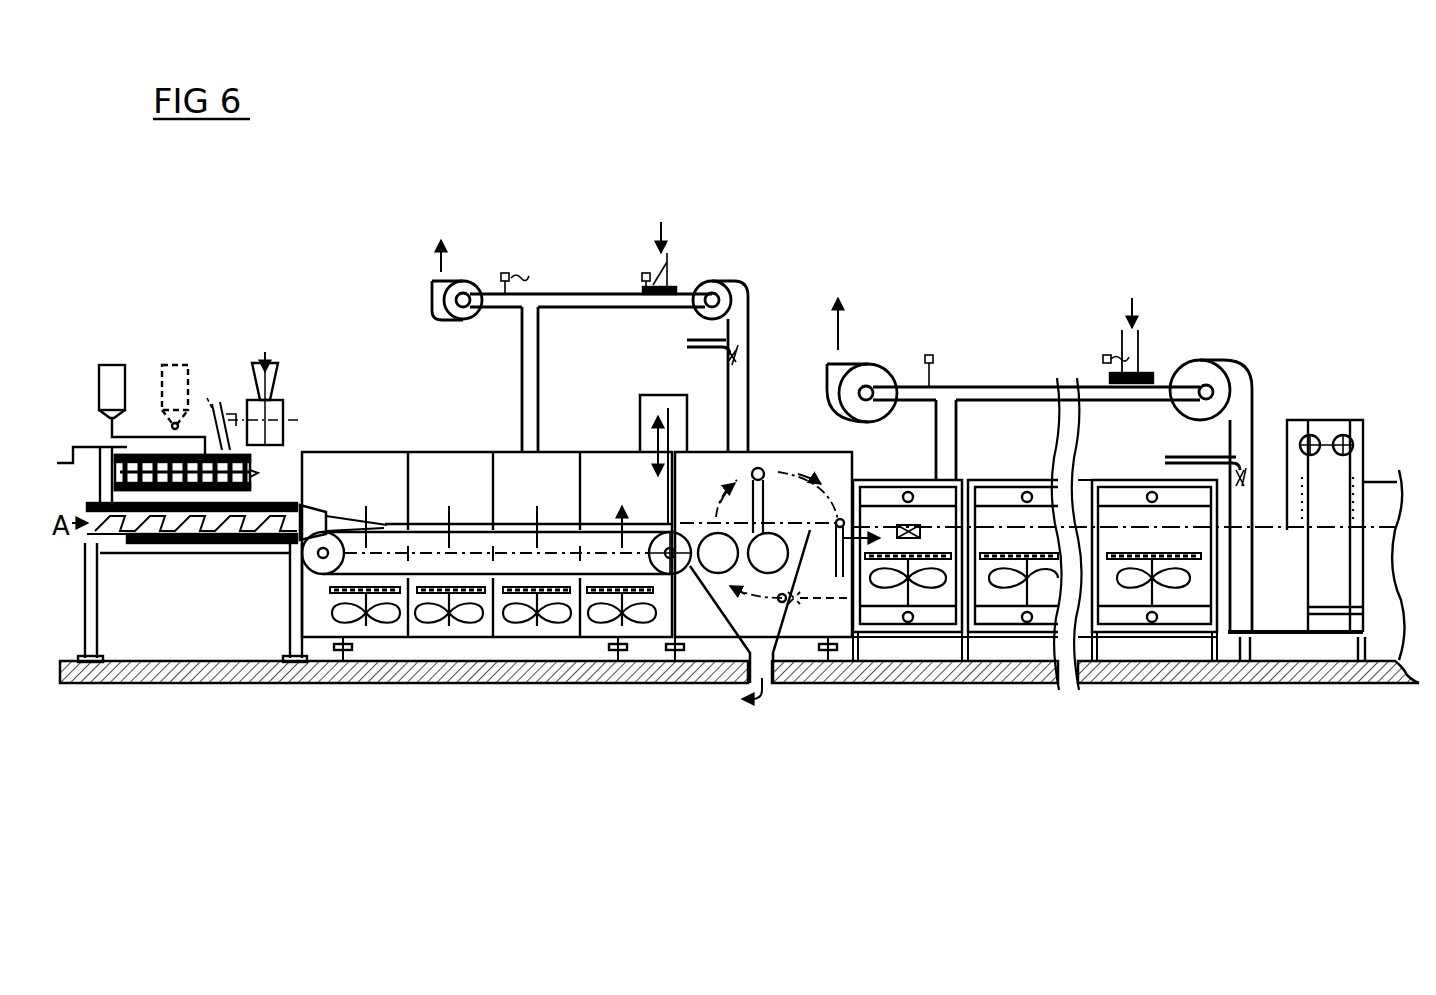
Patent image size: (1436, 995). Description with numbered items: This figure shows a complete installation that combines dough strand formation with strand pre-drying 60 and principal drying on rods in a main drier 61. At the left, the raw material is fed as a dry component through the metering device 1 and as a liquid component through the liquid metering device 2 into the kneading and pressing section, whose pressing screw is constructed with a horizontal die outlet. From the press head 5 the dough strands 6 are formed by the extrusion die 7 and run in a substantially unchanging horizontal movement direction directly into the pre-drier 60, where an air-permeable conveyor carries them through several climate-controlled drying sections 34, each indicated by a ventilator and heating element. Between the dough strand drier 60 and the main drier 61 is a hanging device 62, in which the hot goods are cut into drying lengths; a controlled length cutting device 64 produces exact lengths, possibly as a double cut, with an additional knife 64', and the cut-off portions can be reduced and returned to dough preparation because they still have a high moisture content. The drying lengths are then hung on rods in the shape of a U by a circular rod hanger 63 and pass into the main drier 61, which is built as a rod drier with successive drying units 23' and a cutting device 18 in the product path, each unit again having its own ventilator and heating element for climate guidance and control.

The metering device 1 is at (284, 402).
The liquid metering device 2 is at (110, 375).
The press head 5 is at (316, 512).
The dough strands 6 is at (340, 514).
The extrusion die 7 is at (324, 516).
The cutting device 18 is at (918, 525).
The drying unit 23' is at (1147, 543).
The drying tunnel 34 is at (492, 485).
The pre-drying (dough strand drier) 60 is at (499, 694).
The main drier 61 is at (1125, 692).
The hanging device 62 is at (810, 693).
The circular rod hanger 63 is at (802, 645).
The controlled length cutting device 64 is at (629, 459).
The additional knife 64' is at (786, 467).